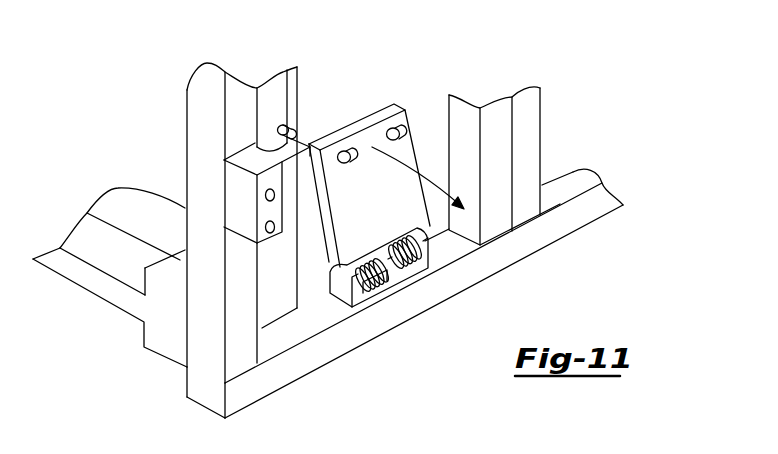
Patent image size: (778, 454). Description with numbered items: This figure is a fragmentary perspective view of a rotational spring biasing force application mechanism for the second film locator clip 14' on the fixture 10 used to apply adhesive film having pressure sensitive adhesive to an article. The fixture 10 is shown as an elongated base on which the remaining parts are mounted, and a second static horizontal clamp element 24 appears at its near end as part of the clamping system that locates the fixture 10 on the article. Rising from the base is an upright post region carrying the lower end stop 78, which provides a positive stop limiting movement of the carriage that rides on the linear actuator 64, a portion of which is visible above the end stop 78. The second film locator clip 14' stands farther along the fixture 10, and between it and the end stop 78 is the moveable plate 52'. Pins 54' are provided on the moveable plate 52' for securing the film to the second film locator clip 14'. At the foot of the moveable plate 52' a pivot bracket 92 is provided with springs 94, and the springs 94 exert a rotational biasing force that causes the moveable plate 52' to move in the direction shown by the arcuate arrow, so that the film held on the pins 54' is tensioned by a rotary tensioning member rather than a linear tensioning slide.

The fixture 10 is at (567, 218).
The second static horizontal clamp element 24 is at (95, 253).
The lower end stop 78 is at (233, 193).
The linear actuator 64 is at (281, 96).
The moveable plate 52' is at (369, 171).
The pins 54' is at (370, 171).
The second film locator clip 14' is at (466, 145).
The pivot bracket 92 is at (431, 256).
The springs 94 is at (378, 277).